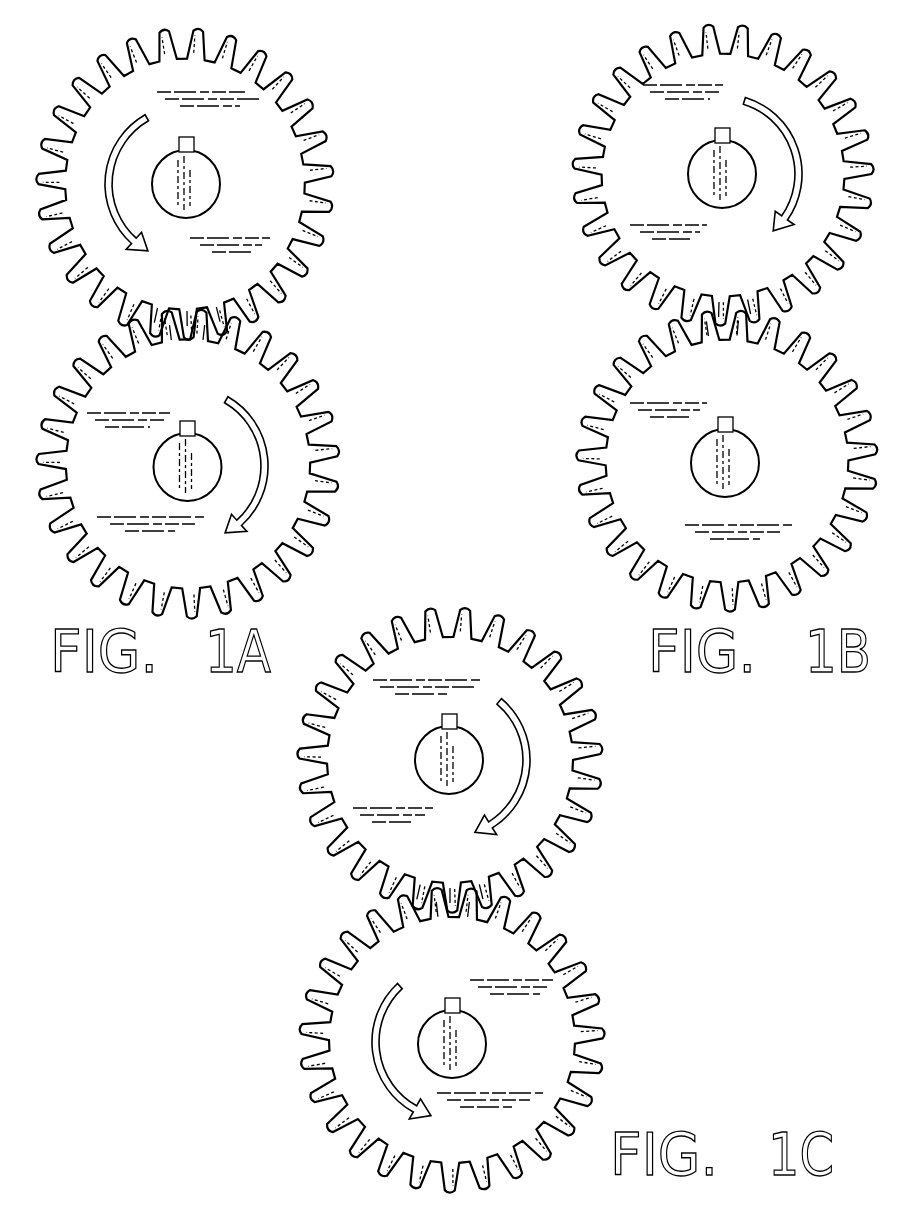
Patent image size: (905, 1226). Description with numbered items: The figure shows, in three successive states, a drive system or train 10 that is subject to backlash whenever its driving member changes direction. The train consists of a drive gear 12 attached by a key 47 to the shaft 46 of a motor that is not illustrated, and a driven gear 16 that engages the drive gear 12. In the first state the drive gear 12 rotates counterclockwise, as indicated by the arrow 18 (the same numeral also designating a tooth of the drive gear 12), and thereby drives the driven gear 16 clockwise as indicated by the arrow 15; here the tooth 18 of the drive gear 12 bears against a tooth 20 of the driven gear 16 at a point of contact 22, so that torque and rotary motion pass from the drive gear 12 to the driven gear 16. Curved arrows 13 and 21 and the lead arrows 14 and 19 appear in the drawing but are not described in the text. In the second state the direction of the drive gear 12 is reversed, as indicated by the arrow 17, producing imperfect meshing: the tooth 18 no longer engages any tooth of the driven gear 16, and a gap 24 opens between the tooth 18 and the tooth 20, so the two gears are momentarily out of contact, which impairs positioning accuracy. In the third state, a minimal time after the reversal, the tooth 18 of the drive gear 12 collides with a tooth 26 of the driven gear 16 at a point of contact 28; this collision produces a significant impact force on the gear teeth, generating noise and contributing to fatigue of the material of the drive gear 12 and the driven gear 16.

In FIG. 1A, the drive system 10 is at (360, 232).
In FIG. 1B, the drive system 10 is at (588, 335).
In FIG. 1C, the drive system 10 is at (660, 903).
In FIG. 1A, the drive gear 12 is at (290, 165).
In FIG. 1B, the drive gear 12 is at (618, 165).
In FIG. 1C, the drive gear 12 is at (553, 746).
In FIG. 1A, the rotation direction arrow of first gear 13 is at (120, 138).
In FIG. 1A, the teeth of first gear 14 is at (322, 98).
In FIG. 1B, the teeth of first gear 14 is at (590, 98).
In FIG. 1C, the teeth of first gear 14 is at (608, 792).
In FIG. 1A, the arrow 15 is at (262, 503).
In FIG. 1A, the driven gear 16 is at (290, 454).
In FIG. 1B, the driven gear 16 is at (613, 452).
In FIG. 1C, the driven gear 16 is at (558, 1028).
In FIG. 1B, the arrow 17 is at (790, 128).
In FIG. 1A, the tooth 18 is at (188, 314).
In FIG. 1B, the tooth 18 is at (723, 313).
In FIG. 1C, the tooth 18 is at (452, 890).
In FIG. 1C, the rotation direction arrow of first gear 19 is at (502, 700).
In FIG. 1A, the tooth 20 is at (203, 340).
In FIG. 1B, the tooth 20 is at (740, 333).
In FIG. 1C, the tooth 20 is at (470, 913).
In FIG. 1C, the rotation direction arrow of second gear 21 is at (370, 1028).
In FIG. 1A, the point of contact 22 is at (195, 332).
In FIG. 1A, the gap 24 is at (165, 298).
In FIG. 1B, the gap 24 is at (764, 294).
In FIG. 1C, the gap 24 is at (500, 873).
In FIG. 1A, the tooth 26 is at (167, 337).
In FIG. 1B, the tooth 26 is at (707, 333).
In FIG. 1C, the tooth 26 is at (440, 917).
In FIG. 1C, the point of contact 28 is at (435, 903).
In FIG. 1A, the shaft 46 is at (207, 193).
In FIG. 1B, the shaft 46 is at (698, 188).
In FIG. 1C, the shaft 46 is at (428, 770).
In FIG. 1A, the key 47 is at (194, 144).
In FIG. 1B, the key 47 is at (716, 140).
In FIG. 1C, the key 47 is at (442, 722).